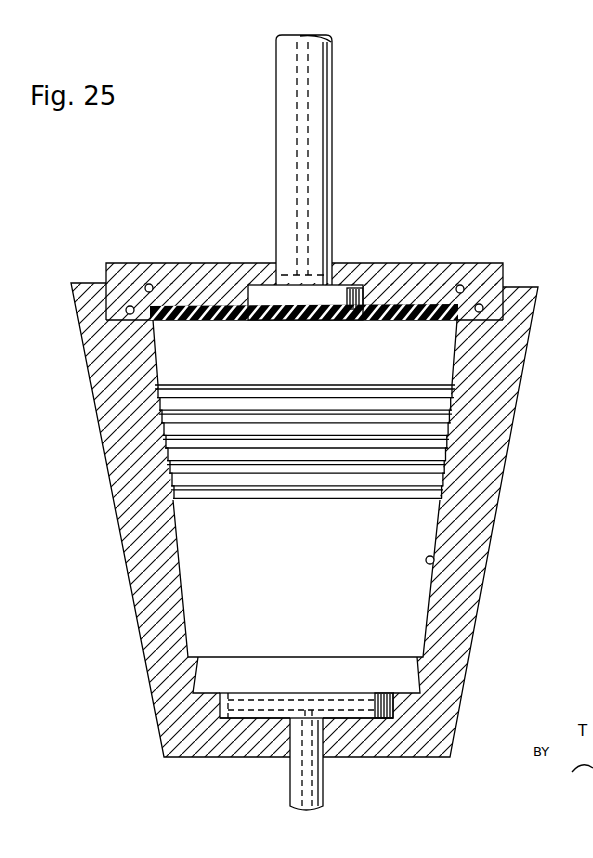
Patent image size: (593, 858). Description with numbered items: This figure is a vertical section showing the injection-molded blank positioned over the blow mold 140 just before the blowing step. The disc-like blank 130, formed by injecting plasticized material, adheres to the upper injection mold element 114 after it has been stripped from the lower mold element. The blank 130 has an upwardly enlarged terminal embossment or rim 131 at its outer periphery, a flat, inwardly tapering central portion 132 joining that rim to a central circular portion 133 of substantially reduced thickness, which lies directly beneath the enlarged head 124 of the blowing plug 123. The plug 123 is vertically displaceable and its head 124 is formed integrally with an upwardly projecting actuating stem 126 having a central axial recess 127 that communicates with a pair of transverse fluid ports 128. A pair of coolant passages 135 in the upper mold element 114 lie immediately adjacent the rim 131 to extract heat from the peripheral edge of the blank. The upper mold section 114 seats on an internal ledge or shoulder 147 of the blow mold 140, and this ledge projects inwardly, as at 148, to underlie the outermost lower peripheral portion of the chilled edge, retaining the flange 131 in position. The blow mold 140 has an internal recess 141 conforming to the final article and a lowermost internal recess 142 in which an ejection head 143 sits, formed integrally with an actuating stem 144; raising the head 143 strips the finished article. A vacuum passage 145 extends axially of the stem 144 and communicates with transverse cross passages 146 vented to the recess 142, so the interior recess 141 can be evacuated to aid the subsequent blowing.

The upper injection mold element 114 is at (394, 278).
The blowing plug 123 is at (333, 150).
The enlarged head 124 is at (343, 300).
The actuating stem 126 is at (276, 105).
The central axial recess 127 is at (304, 190).
The transverse fluid ports 128 is at (294, 270).
The disc-like blank 130 is at (438, 305).
The terminal embossment 131 is at (156, 304).
The central portion 132 is at (222, 322).
The central circular portion 133 is at (304, 323).
The coolant passages 135 is at (481, 305).
The blow mold 140 is at (486, 479).
The internal recess 141 is at (434, 562).
The lowermost internal recess 142 is at (395, 712).
The ejection head 143 is at (250, 714).
The actuating stem 144 is at (324, 778).
The vacuum passage 145 is at (302, 800).
The transverse cross passages 146 is at (284, 702).
The internal ledge 147 is at (490, 330).
The inward projection of ledge 148 is at (462, 324).